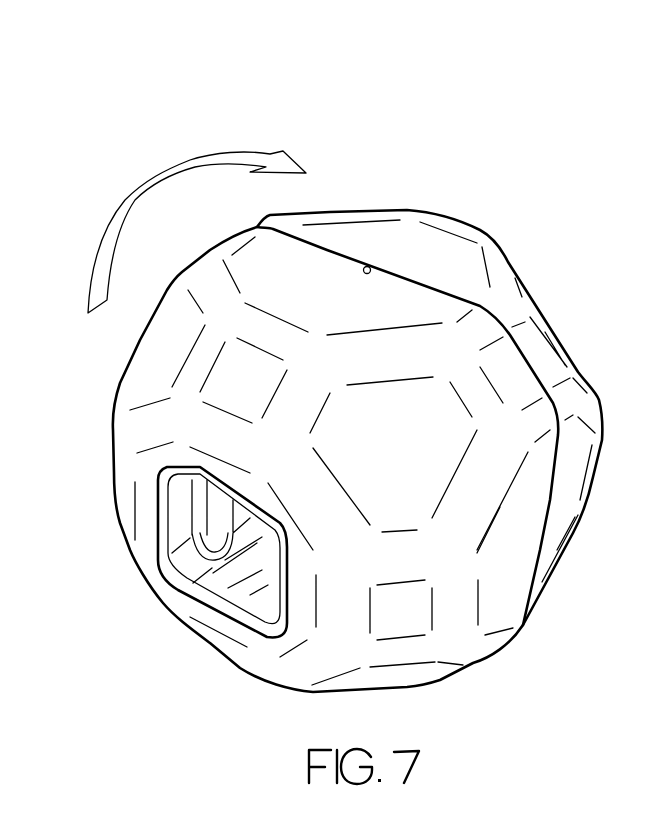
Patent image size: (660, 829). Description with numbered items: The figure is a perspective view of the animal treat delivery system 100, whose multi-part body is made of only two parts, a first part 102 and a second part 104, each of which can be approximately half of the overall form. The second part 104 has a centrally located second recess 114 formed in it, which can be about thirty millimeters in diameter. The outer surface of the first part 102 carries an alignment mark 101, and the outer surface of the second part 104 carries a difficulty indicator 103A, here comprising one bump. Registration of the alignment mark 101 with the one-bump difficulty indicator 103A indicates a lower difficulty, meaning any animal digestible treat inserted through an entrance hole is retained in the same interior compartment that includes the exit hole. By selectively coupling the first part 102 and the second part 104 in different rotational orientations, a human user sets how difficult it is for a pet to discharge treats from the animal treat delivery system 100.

The animal treat delivery system 100 is at (424, 120).
The alignment mark 101 is at (383, 262).
The first part 102 is at (445, 243).
The difficulty indicator 103A is at (361, 275).
The second part 104 is at (130, 374).
The second recess 114 is at (236, 612).